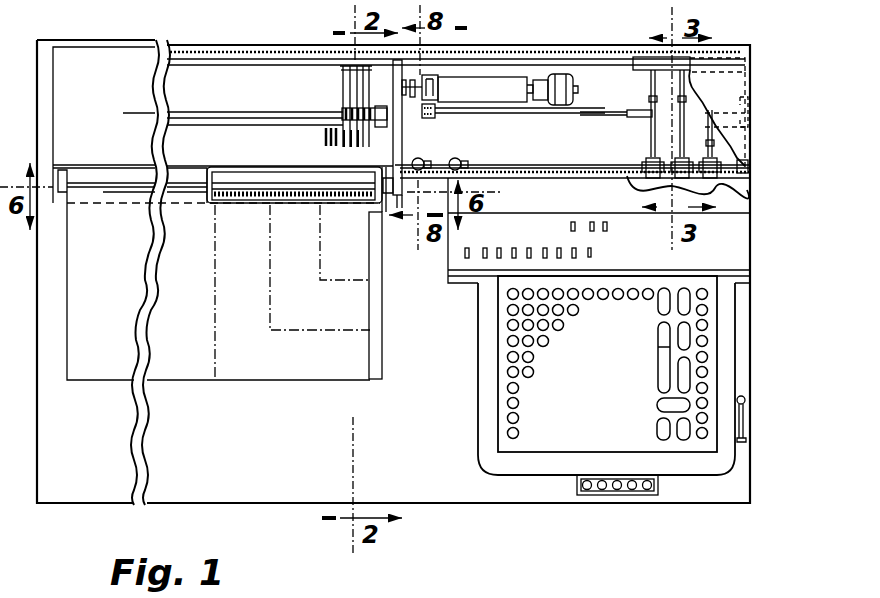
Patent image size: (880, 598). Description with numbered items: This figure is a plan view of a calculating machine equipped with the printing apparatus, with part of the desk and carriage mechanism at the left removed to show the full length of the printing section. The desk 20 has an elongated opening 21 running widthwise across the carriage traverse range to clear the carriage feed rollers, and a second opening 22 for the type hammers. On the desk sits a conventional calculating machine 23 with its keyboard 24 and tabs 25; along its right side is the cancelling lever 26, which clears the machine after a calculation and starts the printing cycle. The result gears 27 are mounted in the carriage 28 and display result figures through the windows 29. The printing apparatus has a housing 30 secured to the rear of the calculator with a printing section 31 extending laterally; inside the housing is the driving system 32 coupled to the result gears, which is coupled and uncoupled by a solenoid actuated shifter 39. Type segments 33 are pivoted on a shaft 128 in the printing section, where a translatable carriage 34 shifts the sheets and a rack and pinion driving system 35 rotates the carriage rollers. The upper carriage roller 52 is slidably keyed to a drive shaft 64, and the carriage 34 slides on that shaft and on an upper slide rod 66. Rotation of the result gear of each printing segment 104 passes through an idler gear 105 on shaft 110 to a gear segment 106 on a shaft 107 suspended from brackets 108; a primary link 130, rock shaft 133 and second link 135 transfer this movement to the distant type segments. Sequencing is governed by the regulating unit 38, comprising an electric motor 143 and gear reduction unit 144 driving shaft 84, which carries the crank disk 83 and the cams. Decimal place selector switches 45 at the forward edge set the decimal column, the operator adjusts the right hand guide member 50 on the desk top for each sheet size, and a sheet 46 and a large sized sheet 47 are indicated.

The desk 20 is at (455, 482).
The elongated opening 21 is at (62, 200).
The second opening 22 is at (246, 125).
The calculating machine 23 is at (724, 345).
The keyboard 24 is at (503, 407).
The tabs 25 is at (664, 380).
The cancelling lever 26 is at (745, 402).
The result gears 27 is at (752, 186).
The carriage 28 is at (733, 240).
The windows 29 is at (571, 212).
The housing 30 is at (60, 82).
The printing section 31 is at (313, 80).
The driving system 32 is at (692, 137).
The type segments 33 is at (321, 142).
The translatable carriage 34 is at (230, 163).
The rack and pinion driving system 35 is at (405, 146).
The regulating unit 38 is at (497, 78).
The solenoid actuated shifter 39 is at (463, 162).
The decimal place selector switches 45 is at (635, 494).
The sheet 46 is at (215, 323).
The large sized sheet 47 is at (97, 363).
The right hand guide member 50 is at (383, 335).
The upper carriage roller 52 is at (251, 197).
The drive shaft 64 is at (135, 190).
The upper slide rod 66 is at (105, 185).
The crank disk 83 is at (405, 94).
The shaft 84 is at (440, 83).
The printing segment 104 is at (385, 138).
The idler gear 105 is at (642, 158).
The gear segment 106 is at (652, 132).
The shaft 107 is at (558, 113).
The brackets 108 is at (436, 114).
The shaft 110 is at (550, 170).
The shaft 128 is at (240, 118).
The primary link 130 is at (653, 83).
The rock shaft 133 is at (200, 50).
The second link 135 is at (328, 119).
The electric motor 143 is at (568, 72).
The gear reduction unit 144 is at (560, 78).